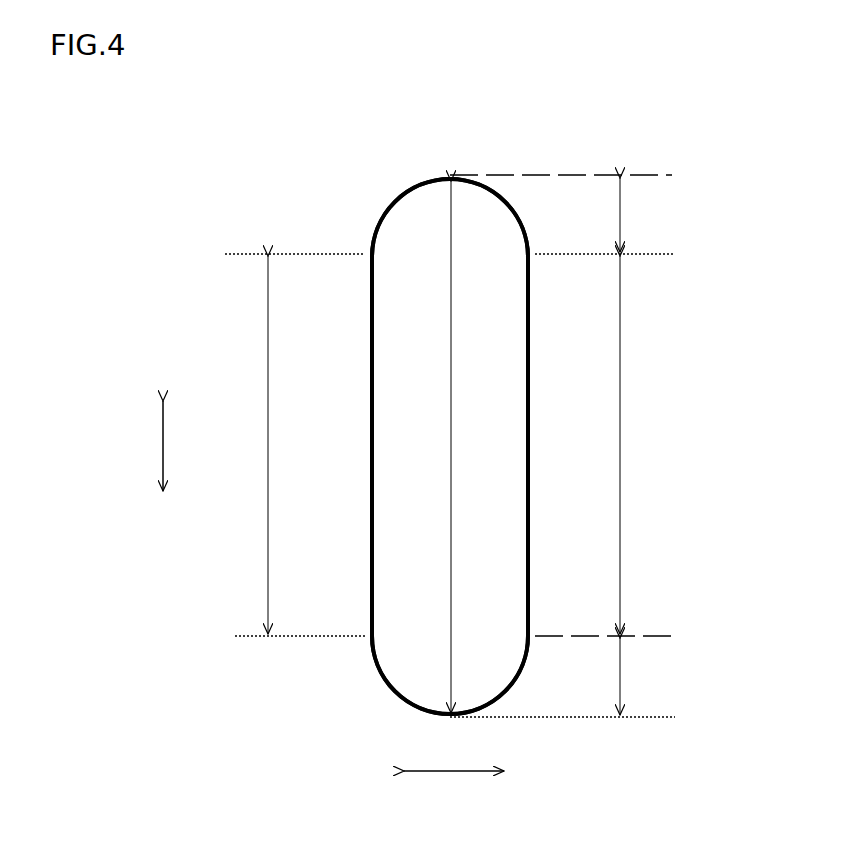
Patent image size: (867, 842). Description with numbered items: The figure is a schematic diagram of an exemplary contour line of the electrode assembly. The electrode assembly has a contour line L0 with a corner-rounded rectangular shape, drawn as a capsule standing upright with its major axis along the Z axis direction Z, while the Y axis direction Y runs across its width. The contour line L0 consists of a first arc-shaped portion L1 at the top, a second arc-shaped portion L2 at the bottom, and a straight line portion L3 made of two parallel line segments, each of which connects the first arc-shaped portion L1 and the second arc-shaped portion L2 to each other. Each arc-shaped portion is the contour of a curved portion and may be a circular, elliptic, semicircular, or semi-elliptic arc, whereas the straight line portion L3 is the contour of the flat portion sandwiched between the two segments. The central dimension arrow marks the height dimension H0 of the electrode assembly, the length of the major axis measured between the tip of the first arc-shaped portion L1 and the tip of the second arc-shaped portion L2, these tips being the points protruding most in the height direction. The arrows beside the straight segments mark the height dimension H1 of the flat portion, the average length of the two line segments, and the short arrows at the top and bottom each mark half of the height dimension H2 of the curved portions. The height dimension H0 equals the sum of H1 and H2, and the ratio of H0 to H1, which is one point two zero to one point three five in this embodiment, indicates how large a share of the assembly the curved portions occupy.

The contour line L0 is at (357, 147).
The first arc-shaped portion L1 is at (519, 221).
The second arc-shaped portion L2 is at (519, 682).
The straight line portion L3 is at (371, 445).
The height dimension of the electrode assembly H0 is at (453, 444).
The height dimension of the flat portion H1 is at (267, 446).
The height dimension of the curved portions H2 is at (623, 211).
The Y axis direction Y is at (455, 774).
The Z axis direction Z is at (162, 447).